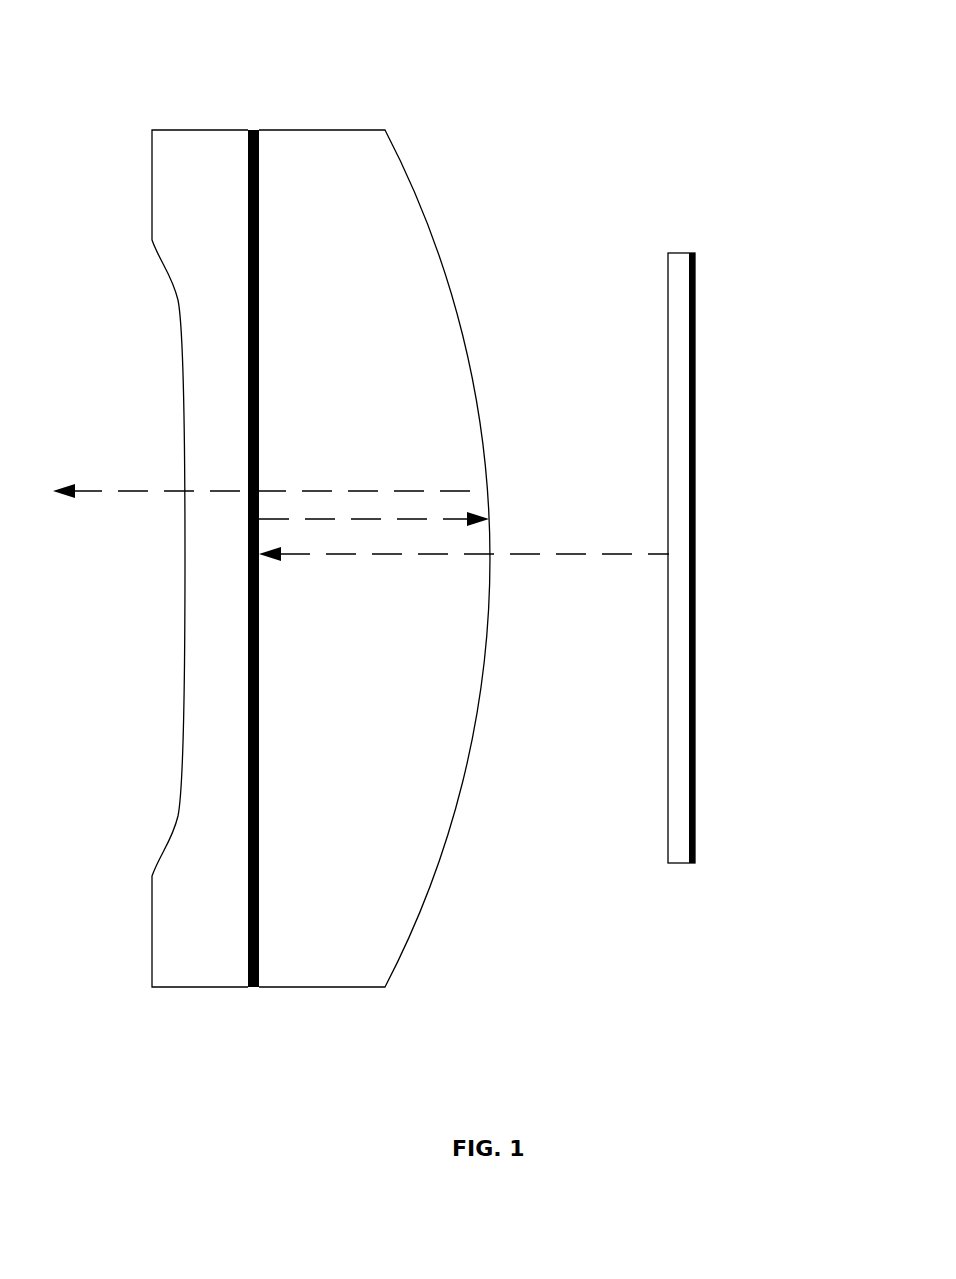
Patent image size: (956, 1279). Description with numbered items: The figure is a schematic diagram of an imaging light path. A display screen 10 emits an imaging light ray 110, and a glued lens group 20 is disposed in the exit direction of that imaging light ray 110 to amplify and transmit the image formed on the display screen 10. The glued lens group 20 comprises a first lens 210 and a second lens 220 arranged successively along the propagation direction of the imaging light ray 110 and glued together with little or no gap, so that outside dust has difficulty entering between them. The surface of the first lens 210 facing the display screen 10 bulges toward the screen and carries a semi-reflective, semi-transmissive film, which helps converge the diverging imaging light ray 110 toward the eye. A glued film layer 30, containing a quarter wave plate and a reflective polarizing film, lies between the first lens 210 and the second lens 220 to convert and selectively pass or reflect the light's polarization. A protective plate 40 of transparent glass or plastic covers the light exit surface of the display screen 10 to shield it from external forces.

The display screen 10 is at (695, 318).
The glued lens group 20 is at (321, 493).
The first lens 210 is at (374, 515).
The second lens 220 is at (200, 130).
The glued film layer 30 is at (258, 988).
The protective plate 40 is at (668, 253).
The imaging light ray 110 is at (620, 556).